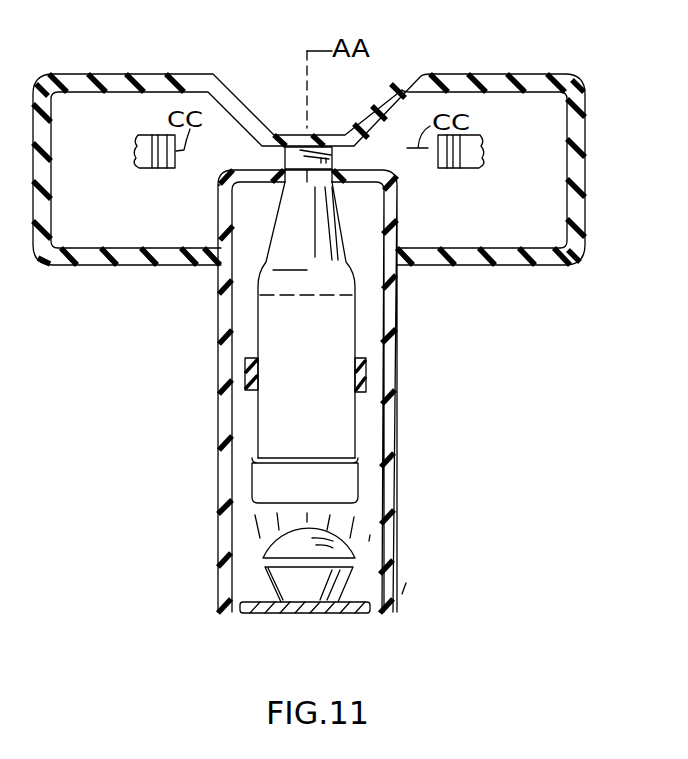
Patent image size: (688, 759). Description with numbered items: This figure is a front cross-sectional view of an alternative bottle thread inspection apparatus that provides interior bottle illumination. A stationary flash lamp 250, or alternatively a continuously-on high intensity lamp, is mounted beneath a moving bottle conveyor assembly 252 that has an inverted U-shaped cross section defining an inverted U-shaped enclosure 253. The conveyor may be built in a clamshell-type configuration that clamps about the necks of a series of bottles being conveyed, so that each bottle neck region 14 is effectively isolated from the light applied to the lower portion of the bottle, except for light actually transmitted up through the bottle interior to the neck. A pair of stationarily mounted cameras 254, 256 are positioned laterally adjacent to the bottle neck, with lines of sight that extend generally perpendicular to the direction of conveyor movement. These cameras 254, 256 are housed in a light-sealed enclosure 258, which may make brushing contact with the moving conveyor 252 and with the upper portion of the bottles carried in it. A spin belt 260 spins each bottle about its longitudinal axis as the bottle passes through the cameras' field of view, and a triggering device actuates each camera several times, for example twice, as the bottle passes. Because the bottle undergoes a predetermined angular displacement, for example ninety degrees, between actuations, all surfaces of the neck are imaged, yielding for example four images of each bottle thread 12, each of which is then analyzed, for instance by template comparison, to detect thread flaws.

The bottle thread 12 is at (301, 150).
The bottle neck region 14 is at (333, 163).
The flash lamp 250 is at (343, 579).
The bottle conveyor assembly 252 is at (392, 500).
The inverted U-shaped enclosure 253 is at (363, 433).
The camera 254 is at (145, 170).
The camera 256 is at (467, 169).
The light-sealed enclosure 258 is at (586, 108).
The spin belt 260 is at (366, 370).